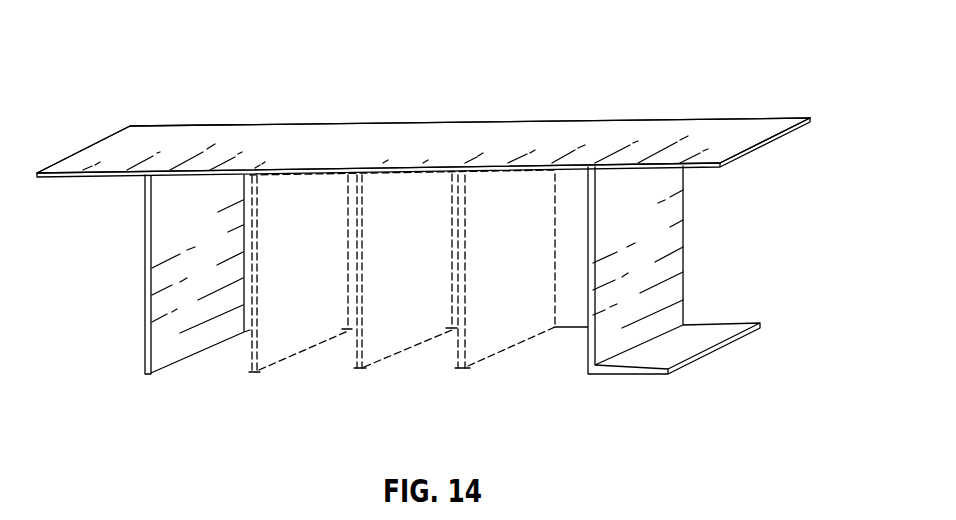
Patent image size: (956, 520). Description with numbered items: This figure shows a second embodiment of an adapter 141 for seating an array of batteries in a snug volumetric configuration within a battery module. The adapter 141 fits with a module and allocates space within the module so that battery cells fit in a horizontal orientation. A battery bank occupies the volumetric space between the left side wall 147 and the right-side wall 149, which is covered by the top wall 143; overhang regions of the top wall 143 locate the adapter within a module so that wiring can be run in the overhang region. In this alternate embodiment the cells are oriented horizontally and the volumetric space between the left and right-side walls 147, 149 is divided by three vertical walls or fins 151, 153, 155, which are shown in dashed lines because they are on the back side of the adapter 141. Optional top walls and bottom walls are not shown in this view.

The adapter 141 is at (470, 57).
The top wall 143 is at (155, 137).
The left side wall 147 is at (164, 249).
The right-side wall 149 is at (680, 218).
The vertical wall or fin 151 is at (274, 352).
The vertical wall or fin 153 is at (376, 353).
The vertical wall or fin 155 is at (493, 345).